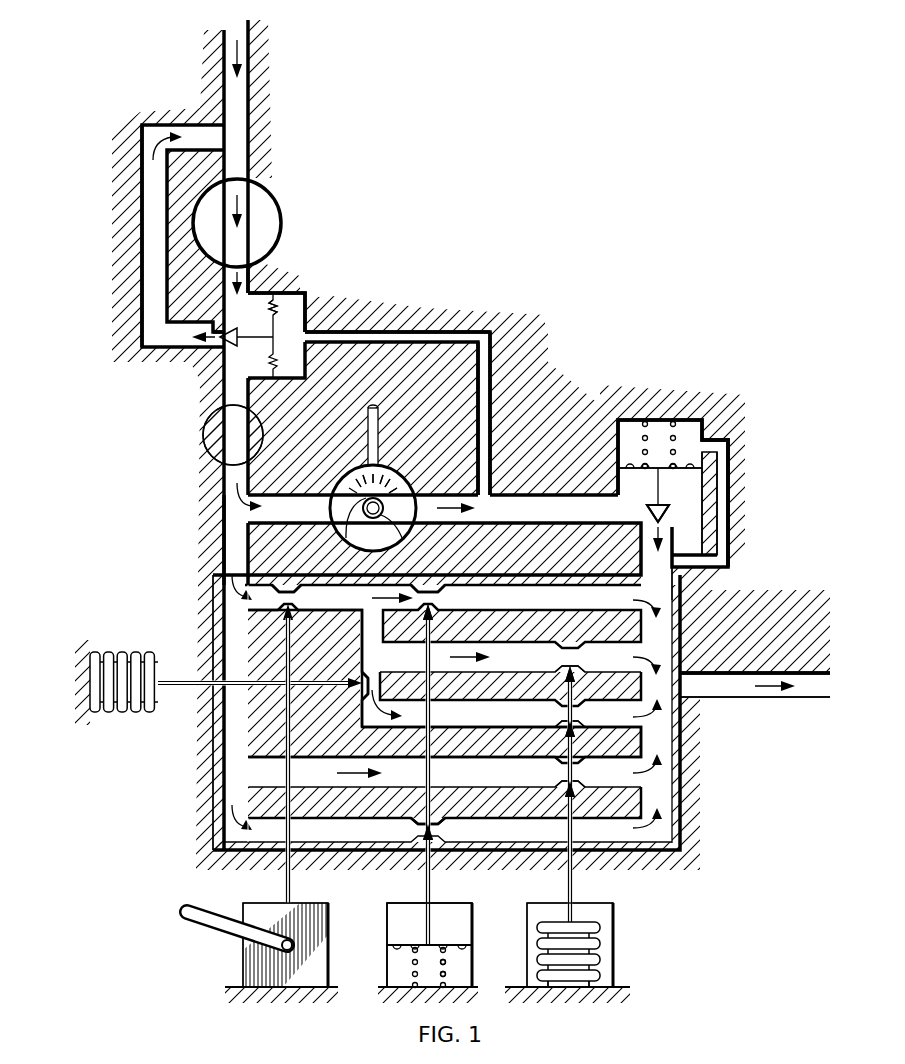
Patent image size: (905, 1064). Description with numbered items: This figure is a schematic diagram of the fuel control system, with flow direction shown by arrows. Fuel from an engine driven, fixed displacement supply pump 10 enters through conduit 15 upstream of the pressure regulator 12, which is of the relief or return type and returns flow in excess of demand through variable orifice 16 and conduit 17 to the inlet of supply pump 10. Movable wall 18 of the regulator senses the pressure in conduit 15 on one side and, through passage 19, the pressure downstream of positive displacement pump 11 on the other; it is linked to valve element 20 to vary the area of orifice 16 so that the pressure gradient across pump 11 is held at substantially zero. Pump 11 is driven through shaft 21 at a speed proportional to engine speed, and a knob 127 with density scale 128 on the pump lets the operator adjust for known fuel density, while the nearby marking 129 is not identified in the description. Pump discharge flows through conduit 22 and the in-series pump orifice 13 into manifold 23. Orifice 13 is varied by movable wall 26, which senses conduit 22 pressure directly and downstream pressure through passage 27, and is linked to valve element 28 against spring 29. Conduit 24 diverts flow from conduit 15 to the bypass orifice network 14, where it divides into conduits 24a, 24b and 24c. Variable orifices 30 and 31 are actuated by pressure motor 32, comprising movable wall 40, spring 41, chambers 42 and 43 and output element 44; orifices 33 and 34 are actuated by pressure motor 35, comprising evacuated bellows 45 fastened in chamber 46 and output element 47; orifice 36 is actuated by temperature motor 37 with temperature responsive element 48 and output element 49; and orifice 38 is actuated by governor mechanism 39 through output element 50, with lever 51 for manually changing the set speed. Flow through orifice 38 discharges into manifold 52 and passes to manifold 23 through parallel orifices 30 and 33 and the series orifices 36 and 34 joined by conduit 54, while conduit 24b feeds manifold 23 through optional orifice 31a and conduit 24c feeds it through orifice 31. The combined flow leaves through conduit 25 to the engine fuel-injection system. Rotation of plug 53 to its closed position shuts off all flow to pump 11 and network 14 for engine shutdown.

The supply pump 10 is at (269, 193).
The positive displacement pump 11 is at (358, 465).
The pressure regulator 12 is at (306, 289).
The in-series pump orifice 13 is at (632, 497).
The bypass orifice network 14 is at (216, 592).
The conduit 15 is at (250, 284).
The variable orifice 16 is at (213, 356).
The conduit 17 is at (150, 215).
The movable wall 18 is at (276, 330).
The passage 19 is at (428, 338).
The valve element 20 is at (237, 330).
The shaft 21 is at (381, 424).
The conduit 22 is at (506, 500).
The manifold 23 is at (682, 582).
The conduit 24 is at (222, 550).
The conduit 24a is at (222, 628).
The conduit 24b is at (258, 771).
The conduit 24c is at (214, 851).
The conduit 25 is at (735, 692).
The movable wall 26 is at (687, 470).
The passage 27 is at (722, 456).
The valve element 28 is at (668, 514).
The spring 29 is at (640, 430).
The variable orifice 30 is at (445, 601).
The variable orifice 31 is at (442, 826).
The optional orifice 31a is at (556, 780).
The pressure motor 32 is at (476, 900).
The variable orifice 33 is at (556, 664).
The variable orifice 34 is at (556, 720).
The pressure motor 35 is at (602, 900).
The variable orifice 36 is at (367, 680).
The temperature motor 37 is at (117, 649).
The variable orifice 38 is at (298, 599).
The governor mechanism 39 is at (331, 900).
The movable wall 40 is at (446, 945).
The spring 41 is at (446, 974).
The chamber 42 is at (390, 925).
The chamber 43 is at (390, 968).
The output element 44 is at (432, 888).
The evacuated bellows 45 is at (614, 928).
The chamber 46 is at (614, 970).
The output element 47 is at (566, 886).
The temperature responsive element 48 is at (143, 712).
The output element 49 is at (300, 686).
The output element 50 is at (284, 882).
The lever 51 is at (208, 938).
The manifold 52 is at (374, 618).
The plug 53 is at (212, 428).
The conduit 54 is at (354, 724).
The knob 127 is at (404, 538).
The density scale 128 is at (344, 538).
The disc markings 129 is at (398, 469).